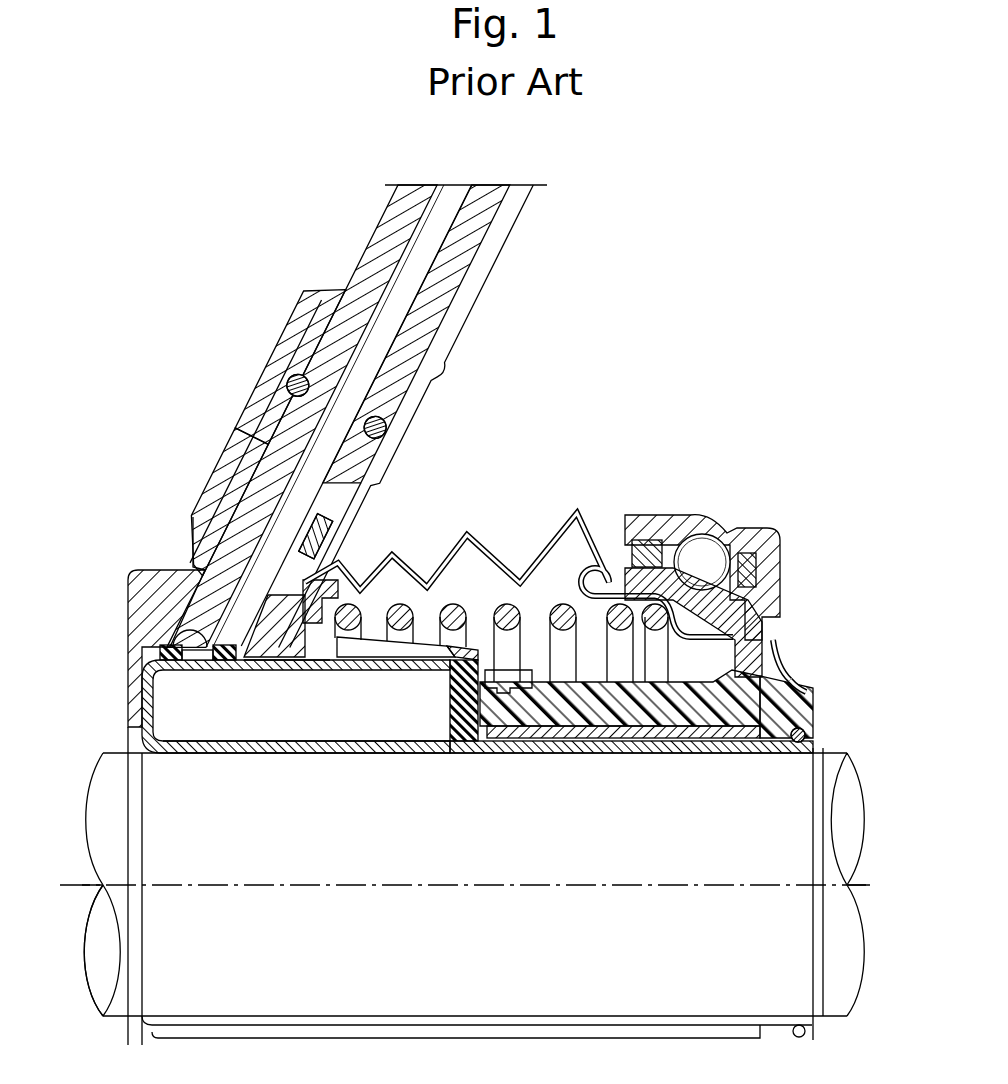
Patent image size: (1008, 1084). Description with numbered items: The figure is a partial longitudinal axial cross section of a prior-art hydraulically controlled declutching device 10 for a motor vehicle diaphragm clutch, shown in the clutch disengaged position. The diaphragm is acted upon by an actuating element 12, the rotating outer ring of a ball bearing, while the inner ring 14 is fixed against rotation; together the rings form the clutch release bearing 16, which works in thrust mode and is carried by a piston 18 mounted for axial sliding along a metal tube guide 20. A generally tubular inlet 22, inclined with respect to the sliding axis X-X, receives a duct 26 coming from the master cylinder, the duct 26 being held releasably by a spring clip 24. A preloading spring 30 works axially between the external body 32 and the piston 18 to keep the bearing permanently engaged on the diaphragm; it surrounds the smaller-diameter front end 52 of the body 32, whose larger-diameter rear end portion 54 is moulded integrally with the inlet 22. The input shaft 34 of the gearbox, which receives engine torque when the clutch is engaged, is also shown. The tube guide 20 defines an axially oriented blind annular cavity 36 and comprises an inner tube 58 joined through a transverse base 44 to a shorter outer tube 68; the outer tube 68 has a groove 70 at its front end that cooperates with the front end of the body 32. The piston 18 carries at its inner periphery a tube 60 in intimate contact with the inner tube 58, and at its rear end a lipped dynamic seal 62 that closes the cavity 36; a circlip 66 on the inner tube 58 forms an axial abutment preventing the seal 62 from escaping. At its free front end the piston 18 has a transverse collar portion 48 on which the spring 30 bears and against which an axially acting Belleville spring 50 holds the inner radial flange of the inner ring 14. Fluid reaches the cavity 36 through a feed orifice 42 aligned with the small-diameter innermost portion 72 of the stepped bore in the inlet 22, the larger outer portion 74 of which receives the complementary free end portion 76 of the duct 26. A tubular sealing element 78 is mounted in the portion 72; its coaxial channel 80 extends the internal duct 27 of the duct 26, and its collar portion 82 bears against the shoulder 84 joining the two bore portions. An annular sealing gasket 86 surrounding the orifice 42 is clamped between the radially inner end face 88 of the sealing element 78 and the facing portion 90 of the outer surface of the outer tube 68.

The declutching device 10 is at (635, 453).
The actuating element 12 is at (733, 525).
The inner ring 14 is at (773, 607).
The clutch release bearing 16 is at (749, 518).
The piston 18 is at (824, 716).
The tube guide 20 is at (345, 760).
The inlet 22 is at (201, 447).
The spring clip 24 is at (290, 378).
The duct 26 is at (490, 198).
The internal duct 27 is at (447, 198).
The preloading spring 30 is at (505, 580).
The external body 32 is at (268, 657).
The input shaft 34 is at (95, 958).
The blind annular cavity 36 is at (338, 722).
The orifice 42 is at (203, 672).
The base 44 is at (140, 705).
The collar portion 48 is at (796, 675).
The axially acting spring 50 is at (784, 653).
The front end of the body 52 is at (431, 636).
The rear end portion of the body 54 is at (130, 583).
The inner tube 58 is at (425, 750).
The tube 60 is at (535, 728).
The dynamic seal 62 is at (442, 701).
The circlip 66 is at (808, 736).
The outer tube 68 is at (318, 662).
The groove 70 is at (490, 668).
The radially innermost portion 72 is at (230, 523).
The radially outer portion 74 is at (262, 445).
The free end portion 76 is at (350, 463).
The tubular sealing element 78 is at (215, 570).
The coaxial channel 80 is at (345, 497).
The collar portion 82 is at (310, 537).
The shoulder 84 is at (222, 498).
The annular sealing gasket 86 is at (165, 652).
The radially inner annular end face 88 is at (240, 672).
The facing portion 90 is at (185, 647).